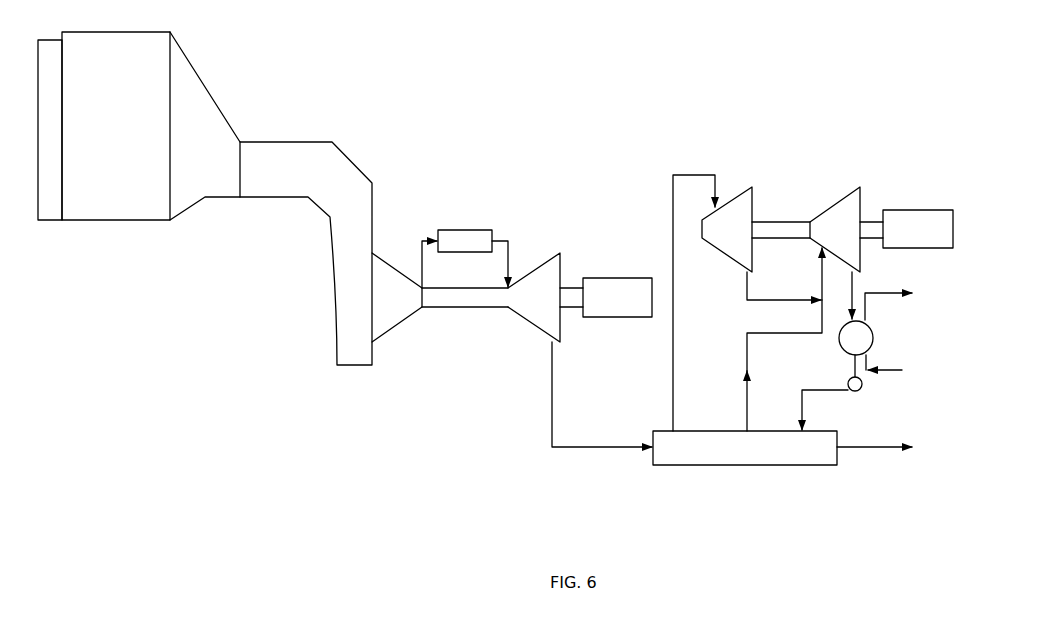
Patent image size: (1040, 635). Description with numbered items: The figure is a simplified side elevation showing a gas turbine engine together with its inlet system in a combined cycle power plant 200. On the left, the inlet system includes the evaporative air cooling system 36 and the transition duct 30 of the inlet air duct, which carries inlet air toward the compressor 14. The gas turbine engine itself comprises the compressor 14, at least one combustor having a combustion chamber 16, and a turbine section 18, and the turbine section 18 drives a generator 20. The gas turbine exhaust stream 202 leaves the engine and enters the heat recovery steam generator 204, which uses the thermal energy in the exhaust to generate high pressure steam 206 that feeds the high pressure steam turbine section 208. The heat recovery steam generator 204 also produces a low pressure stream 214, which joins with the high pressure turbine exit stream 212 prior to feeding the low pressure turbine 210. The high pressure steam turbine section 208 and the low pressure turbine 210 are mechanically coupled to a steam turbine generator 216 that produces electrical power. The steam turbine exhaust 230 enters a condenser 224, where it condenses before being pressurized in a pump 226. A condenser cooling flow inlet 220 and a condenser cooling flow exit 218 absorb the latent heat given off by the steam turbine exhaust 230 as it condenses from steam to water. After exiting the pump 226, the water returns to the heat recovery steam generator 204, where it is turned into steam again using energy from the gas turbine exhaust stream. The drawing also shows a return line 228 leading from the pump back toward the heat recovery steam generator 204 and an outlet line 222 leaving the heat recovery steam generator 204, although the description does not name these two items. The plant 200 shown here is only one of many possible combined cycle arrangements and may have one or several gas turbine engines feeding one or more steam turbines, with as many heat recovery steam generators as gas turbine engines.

The combined cycle power plant 200 is at (774, 58).
The air cooling system 36 is at (125, 132).
The transition duct 30 is at (190, 156).
The compressor 14 is at (392, 269).
The combustion chamber 16 is at (465, 230).
The turbine section 18 is at (535, 274).
The generator 20 is at (617, 278).
The gas turbine exhaust stream 202 is at (586, 445).
The heat recovery steam generator 204 is at (745, 468).
The high pressure steam 206 is at (672, 376).
The high pressure steam turbine section 208 is at (732, 203).
The low pressure turbine 210 is at (835, 210).
The steam turbine generator 216 is at (917, 210).
The high pressure turbine exit stream 212 is at (745, 285).
The low pressure stream 214 is at (745, 400).
The steam turbine exhaust 230 is at (855, 284).
The condenser 224 is at (875, 335).
The condenser cooling flow exit 218 is at (887, 300).
The condenser cooling flow inlet 220 is at (895, 376).
The pump 226 is at (860, 393).
The return line 228 is at (815, 389).
The exhaust outlet line 222 is at (875, 450).